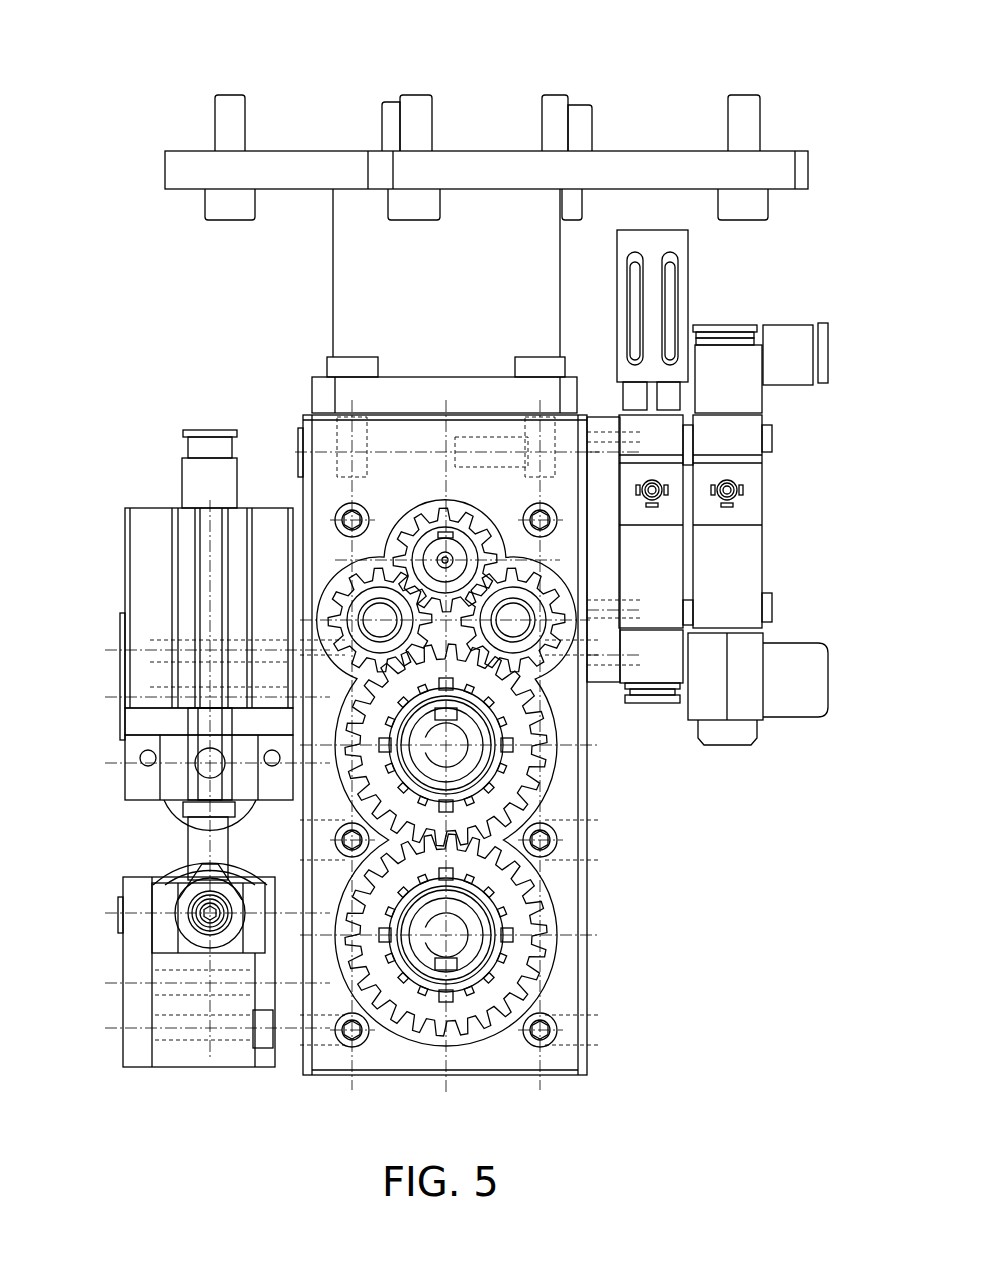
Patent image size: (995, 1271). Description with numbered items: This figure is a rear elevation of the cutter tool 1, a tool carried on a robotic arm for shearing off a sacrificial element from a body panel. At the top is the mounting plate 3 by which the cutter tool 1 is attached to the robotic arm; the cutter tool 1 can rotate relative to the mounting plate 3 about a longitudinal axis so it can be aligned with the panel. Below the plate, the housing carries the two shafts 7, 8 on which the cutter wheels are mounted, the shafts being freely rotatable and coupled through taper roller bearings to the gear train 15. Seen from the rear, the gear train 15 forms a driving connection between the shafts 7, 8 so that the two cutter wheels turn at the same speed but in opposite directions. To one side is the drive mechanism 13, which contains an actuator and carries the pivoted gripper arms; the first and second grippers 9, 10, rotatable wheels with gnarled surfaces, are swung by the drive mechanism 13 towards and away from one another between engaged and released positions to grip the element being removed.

The cutter tool 1 is at (108, 308).
The mounting plate 3 is at (607, 165).
The shaft 7 is at (460, 748).
The shaft 8 is at (458, 930).
The first gripper 9 is at (172, 812).
The second gripper 10 is at (178, 865).
The drive mechanism 13 is at (163, 590).
The gear train 15 is at (570, 761).